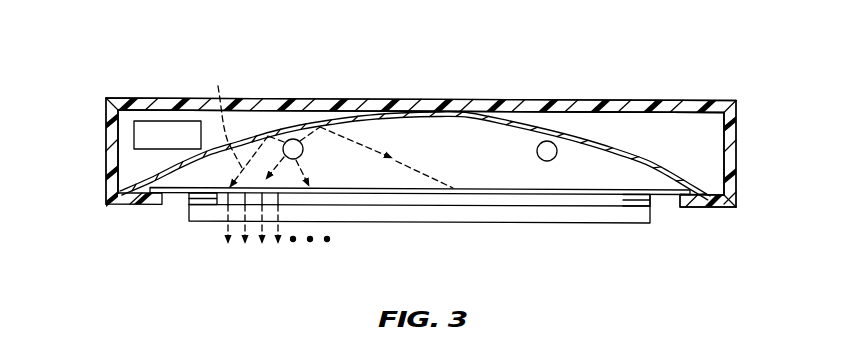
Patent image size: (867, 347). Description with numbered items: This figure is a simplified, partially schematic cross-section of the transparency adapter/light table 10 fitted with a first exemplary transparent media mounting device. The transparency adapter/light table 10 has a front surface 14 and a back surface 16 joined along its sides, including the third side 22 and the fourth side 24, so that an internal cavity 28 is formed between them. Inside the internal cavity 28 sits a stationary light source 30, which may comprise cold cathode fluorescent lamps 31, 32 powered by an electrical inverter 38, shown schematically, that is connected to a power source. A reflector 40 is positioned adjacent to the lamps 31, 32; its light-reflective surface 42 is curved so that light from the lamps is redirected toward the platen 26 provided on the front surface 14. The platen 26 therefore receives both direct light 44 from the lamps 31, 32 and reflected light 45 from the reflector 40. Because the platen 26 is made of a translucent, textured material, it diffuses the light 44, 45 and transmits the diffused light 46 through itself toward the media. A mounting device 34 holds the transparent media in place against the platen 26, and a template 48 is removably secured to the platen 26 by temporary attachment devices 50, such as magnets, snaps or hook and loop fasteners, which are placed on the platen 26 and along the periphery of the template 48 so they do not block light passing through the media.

The transparency adapter/light table 10 is at (690, 52).
The front surface 14 is at (720, 208).
The back surface 16 is at (488, 100).
The third side 22 is at (106, 142).
The fourth side 24 is at (737, 165).
The platen 26 is at (560, 199).
The internal cavity 28 is at (688, 150).
The stationary light source 30 is at (558, 112).
The cold cathode fluorescent lamp 31 is at (303, 155).
The cold cathode fluorescent lamp 32 is at (537, 151).
The mounting device 34 is at (605, 246).
The electrical inverter 38 is at (167, 130).
The reflector 40 is at (602, 128).
The light-reflective surface 42 is at (436, 118).
The direct light 44 is at (310, 173).
The reflected light 45 is at (226, 114).
The diffused light 46 is at (228, 230).
The template 48 is at (421, 225).
The temporary attachment device 50 is at (188, 203).